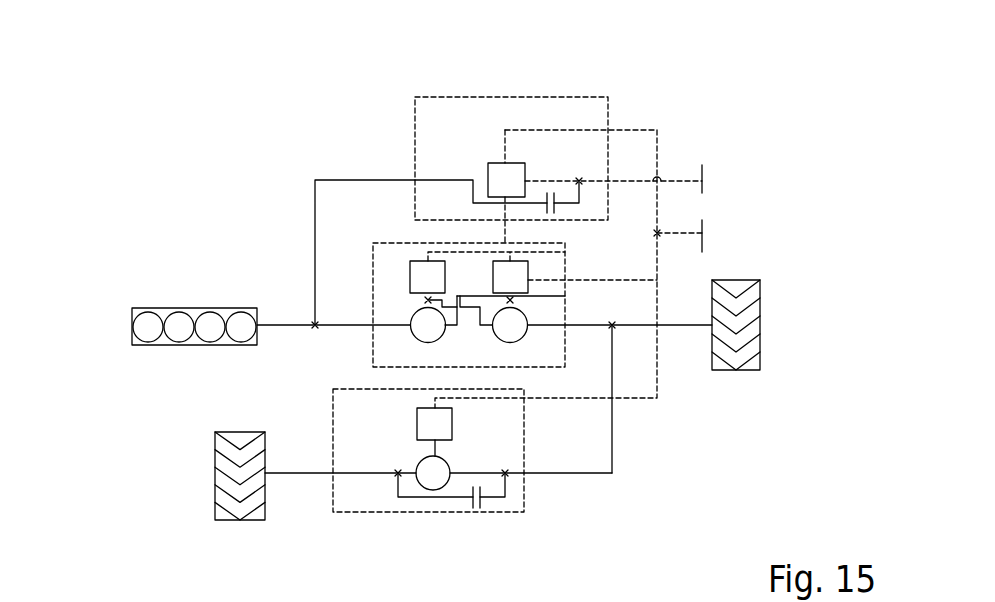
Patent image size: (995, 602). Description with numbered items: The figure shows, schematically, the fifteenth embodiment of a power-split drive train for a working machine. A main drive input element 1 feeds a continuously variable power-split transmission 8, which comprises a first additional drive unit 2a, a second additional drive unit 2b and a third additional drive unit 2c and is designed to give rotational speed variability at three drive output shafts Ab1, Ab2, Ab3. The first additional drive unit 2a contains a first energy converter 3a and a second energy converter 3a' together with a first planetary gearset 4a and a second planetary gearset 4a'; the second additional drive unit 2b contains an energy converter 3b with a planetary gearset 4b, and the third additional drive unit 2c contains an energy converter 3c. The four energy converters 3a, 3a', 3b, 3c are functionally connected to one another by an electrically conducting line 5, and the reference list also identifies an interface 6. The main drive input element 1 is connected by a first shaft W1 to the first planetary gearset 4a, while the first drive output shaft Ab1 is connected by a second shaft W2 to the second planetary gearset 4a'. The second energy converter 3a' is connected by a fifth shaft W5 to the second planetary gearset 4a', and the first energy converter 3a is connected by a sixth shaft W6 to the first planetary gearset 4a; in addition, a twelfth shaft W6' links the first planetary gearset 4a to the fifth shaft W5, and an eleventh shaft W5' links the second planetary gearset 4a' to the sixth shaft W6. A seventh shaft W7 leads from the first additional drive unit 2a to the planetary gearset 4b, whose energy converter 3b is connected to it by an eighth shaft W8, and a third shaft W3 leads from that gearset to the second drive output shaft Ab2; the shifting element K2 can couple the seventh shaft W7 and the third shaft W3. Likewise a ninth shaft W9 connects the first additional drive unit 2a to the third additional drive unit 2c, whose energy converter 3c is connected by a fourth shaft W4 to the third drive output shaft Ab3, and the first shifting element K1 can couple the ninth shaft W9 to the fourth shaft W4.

The main drive input element 1 is at (132, 310).
The first shaft W1 is at (347, 327).
The ninth shaft W9 is at (315, 227).
The first additional drive unit 2a is at (373, 243).
The second additional drive unit 2b is at (525, 490).
The third additional drive unit 2c is at (415, 160).
The first energy converter of the first additional drive unit 3a is at (243, 235).
The second energy converter of the first additional drive unit 3a' is at (696, 251).
The energy converter of the second additional drive unit 3b is at (422, 421).
The energy converter of the third additional drive unit 3c is at (503, 175).
The first planetary gearset of the first additional drive unit 4a is at (244, 358).
The second planetary gearset of the first additional drive unit 4a' is at (679, 380).
The planetary gearset of the second additional drive unit 4b is at (437, 484).
The electrically conducting line 5 is at (623, 128).
The interface 6 is at (660, 233).
The continuously variable power-split transmission 8 is at (748, 108).
The first shifting element of the third additional drive unit K1 is at (557, 212).
The shifting element of the second additional drive unit K2 is at (478, 514).
The second shaft W2 is at (575, 327).
The third shaft W3 is at (347, 477).
The fourth shaft W4 is at (637, 178).
The fifth shaft W5 is at (662, 290).
The eleventh shaft W5' is at (560, 447).
The sixth shaft W6 is at (246, 266).
The twelfth shaft W6' is at (526, 447).
The seventh shaft W7 is at (614, 430).
The eighth shaft W8 is at (425, 447).
The first drive output shaft Ab1 is at (673, 328).
The second drive output shaft Ab2 is at (300, 477).
The third drive output shaft Ab3 is at (668, 178).